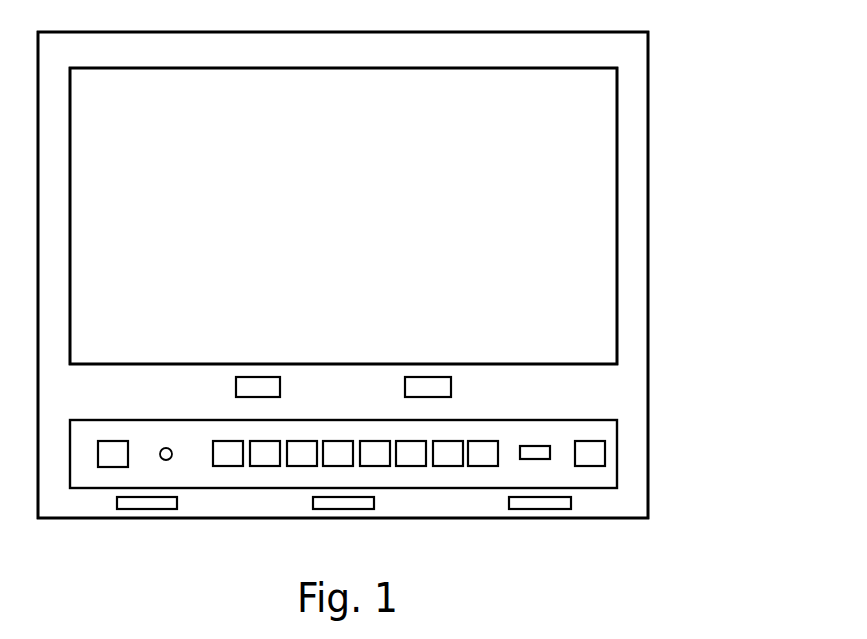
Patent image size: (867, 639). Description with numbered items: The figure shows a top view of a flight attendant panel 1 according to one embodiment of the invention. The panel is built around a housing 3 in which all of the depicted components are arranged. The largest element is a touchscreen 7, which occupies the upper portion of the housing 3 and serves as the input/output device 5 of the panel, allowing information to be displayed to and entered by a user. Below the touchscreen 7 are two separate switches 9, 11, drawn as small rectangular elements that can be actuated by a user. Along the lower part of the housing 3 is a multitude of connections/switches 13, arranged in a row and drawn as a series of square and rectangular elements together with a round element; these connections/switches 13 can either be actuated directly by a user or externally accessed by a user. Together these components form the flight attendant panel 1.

The flight attendant panel 1 is at (688, 182).
The housing 3 is at (648, 290).
The input/output device 5 is at (617, 117).
The touchscreen 7 is at (571, 128).
The switch 9 is at (282, 386).
The switch 11 is at (452, 386).
The connections/switches 13 is at (627, 450).